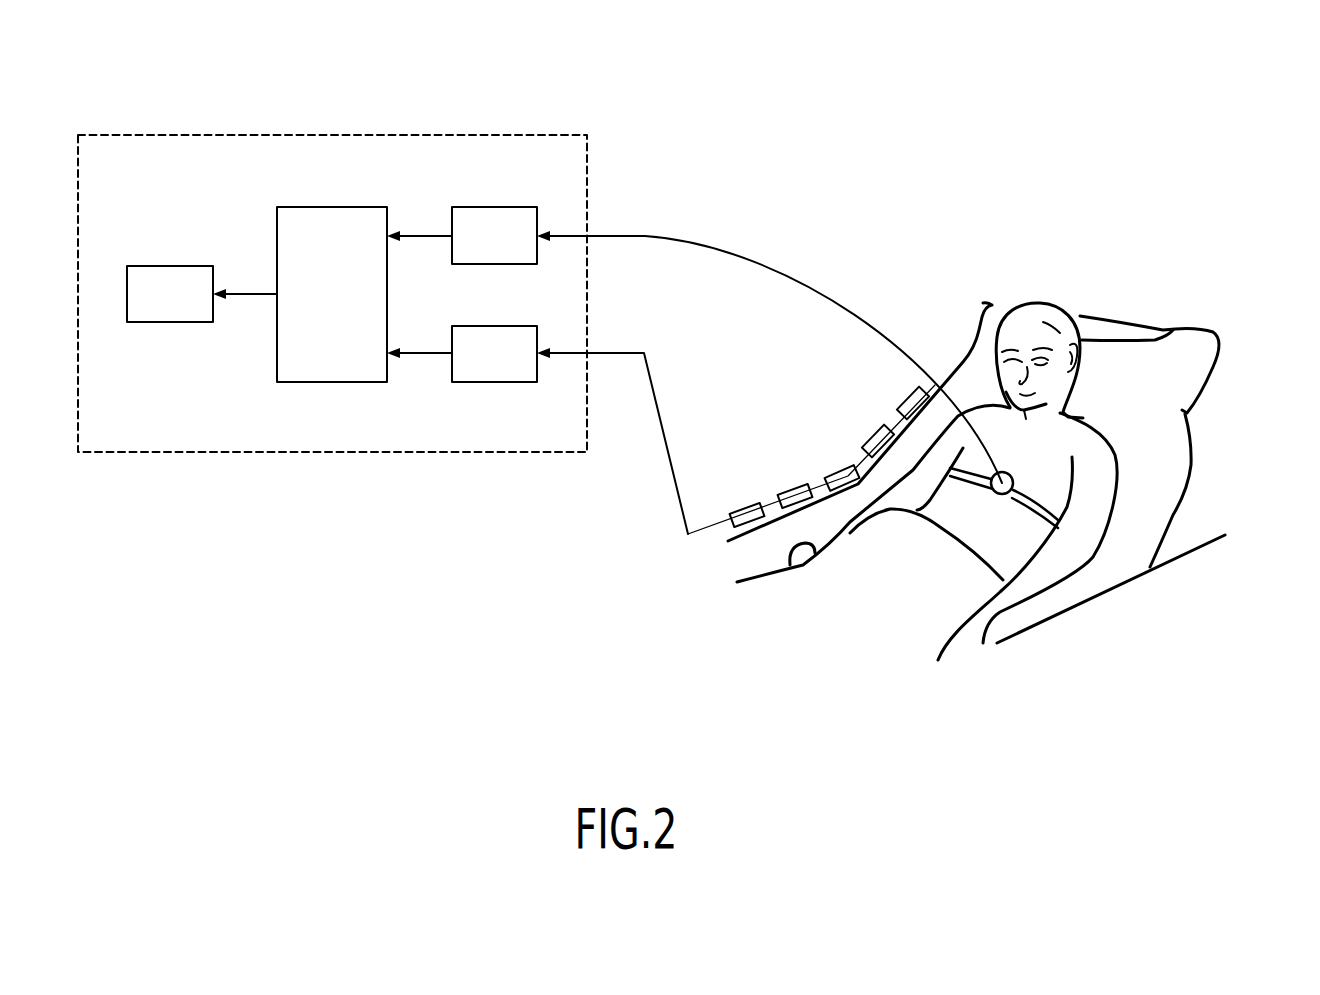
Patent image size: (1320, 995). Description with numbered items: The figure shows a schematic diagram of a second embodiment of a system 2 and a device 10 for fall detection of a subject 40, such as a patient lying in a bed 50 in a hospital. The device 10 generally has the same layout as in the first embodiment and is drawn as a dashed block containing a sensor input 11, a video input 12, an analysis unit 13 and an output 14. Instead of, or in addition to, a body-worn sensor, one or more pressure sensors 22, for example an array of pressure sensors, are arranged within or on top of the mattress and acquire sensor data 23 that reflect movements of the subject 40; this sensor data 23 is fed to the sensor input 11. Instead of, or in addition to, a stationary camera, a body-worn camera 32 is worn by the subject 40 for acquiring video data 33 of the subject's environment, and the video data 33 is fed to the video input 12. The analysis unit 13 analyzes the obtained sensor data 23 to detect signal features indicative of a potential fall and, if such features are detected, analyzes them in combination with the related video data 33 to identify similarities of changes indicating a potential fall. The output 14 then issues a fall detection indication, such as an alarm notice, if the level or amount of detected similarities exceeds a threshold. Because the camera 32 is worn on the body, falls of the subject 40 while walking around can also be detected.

The system 2 is at (1163, 97).
The device 10 is at (223, 453).
The sensor input 11 is at (492, 383).
The video input 12 is at (492, 206).
The analysis unit 13 is at (333, 383).
The output 14 is at (172, 323).
The pressure sensors 22 is at (776, 460).
The sensor data 23 is at (620, 355).
The body-worn camera 32 is at (1012, 478).
The video data 33 is at (608, 234).
The subject 40 is at (1077, 440).
The bed 50 is at (1173, 445).